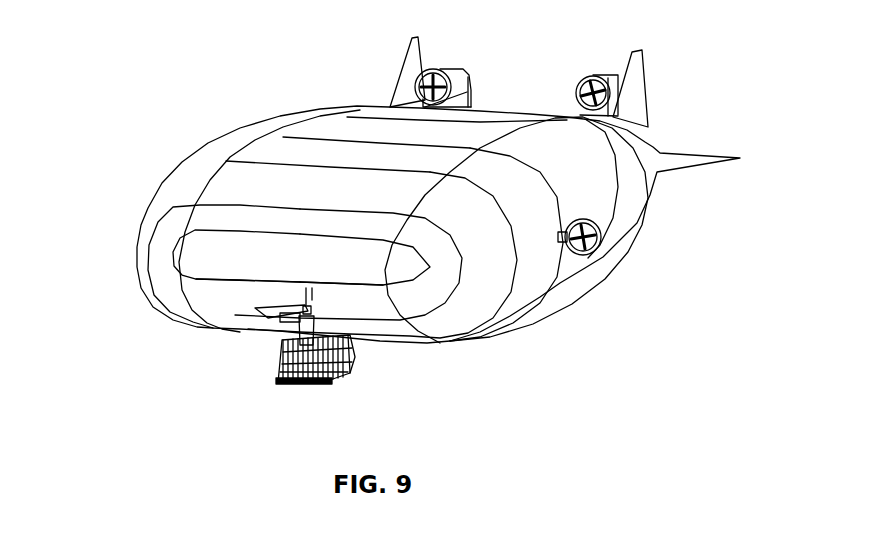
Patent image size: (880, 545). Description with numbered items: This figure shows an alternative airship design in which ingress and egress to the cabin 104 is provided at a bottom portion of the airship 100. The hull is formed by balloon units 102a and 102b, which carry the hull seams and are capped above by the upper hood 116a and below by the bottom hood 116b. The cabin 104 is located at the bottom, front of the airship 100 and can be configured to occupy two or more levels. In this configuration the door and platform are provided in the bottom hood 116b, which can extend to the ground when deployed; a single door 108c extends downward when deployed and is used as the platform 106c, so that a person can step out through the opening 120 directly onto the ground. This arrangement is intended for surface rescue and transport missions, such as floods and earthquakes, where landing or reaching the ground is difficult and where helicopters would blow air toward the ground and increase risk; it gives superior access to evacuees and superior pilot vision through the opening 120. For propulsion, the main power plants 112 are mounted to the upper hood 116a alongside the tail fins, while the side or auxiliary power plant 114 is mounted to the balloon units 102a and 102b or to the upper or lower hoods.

The airship 100 is at (310, 92).
The balloon unit 102a is at (143, 253).
The balloon unit 102b is at (498, 310).
The cabin 104 is at (373, 332).
The platform 106c is at (257, 374).
The door 108c is at (304, 384).
The main power plant 112 is at (457, 66).
The side or auxiliary power plant 114 is at (604, 244).
The upper hood 116a is at (268, 158).
The bottom hood 116b is at (240, 318).
The opening 120 is at (283, 330).